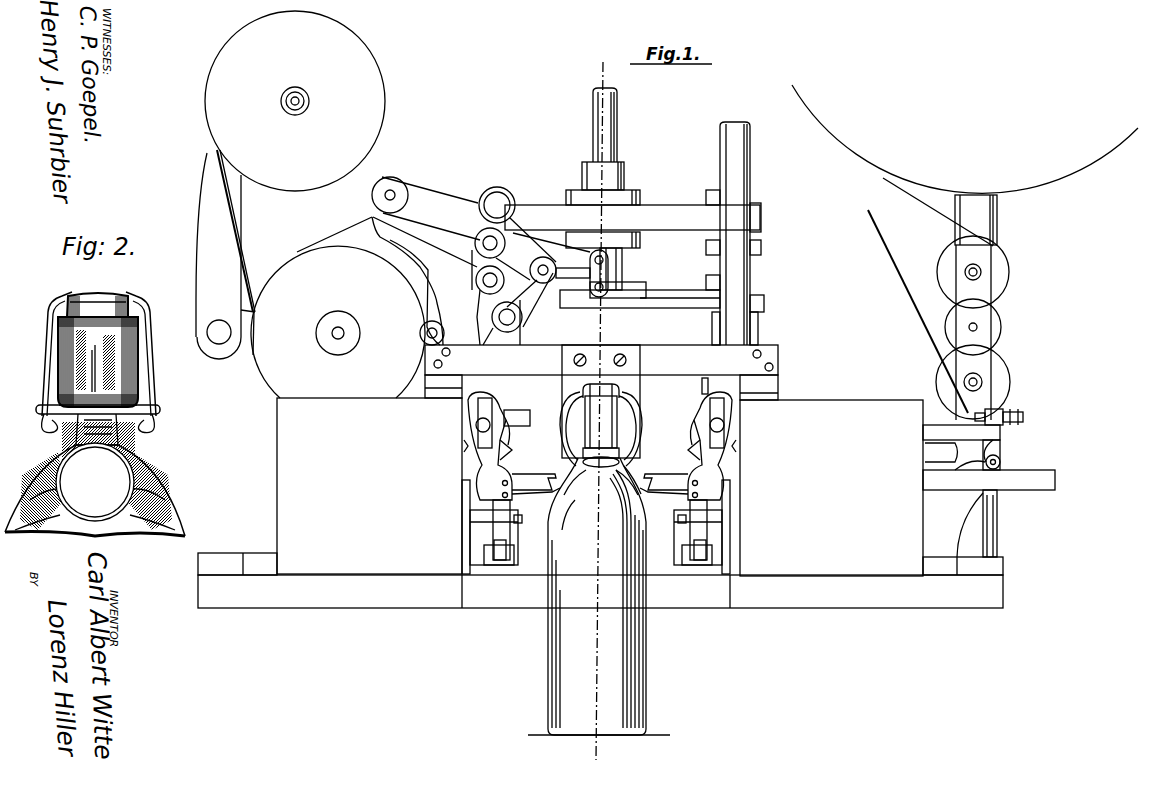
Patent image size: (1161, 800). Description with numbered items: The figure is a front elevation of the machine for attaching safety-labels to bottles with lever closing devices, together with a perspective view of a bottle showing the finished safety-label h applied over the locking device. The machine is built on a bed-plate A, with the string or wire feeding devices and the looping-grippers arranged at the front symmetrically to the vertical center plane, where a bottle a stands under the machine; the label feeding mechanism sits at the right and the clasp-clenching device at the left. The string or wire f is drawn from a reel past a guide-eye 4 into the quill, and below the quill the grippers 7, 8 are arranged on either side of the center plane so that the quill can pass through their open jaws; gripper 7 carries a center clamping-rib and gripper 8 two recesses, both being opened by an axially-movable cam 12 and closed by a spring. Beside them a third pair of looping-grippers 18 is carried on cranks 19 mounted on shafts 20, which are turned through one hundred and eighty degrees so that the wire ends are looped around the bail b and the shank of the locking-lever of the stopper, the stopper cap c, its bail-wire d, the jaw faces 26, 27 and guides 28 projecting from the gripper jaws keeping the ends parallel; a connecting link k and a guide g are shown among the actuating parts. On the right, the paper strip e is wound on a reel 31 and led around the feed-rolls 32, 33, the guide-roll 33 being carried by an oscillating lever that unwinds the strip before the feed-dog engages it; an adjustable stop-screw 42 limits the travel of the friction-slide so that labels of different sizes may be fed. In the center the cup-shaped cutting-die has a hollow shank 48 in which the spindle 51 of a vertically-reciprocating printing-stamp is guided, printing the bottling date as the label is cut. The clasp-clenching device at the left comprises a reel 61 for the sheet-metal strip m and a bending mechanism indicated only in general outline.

In FIG. 1, the second guide-eye 4 is at (1010, 455).
In FIG. 1, the reel 61 is at (212, 100).
In FIG. 1, the sheet-metal strip m is at (244, 270).
In FIG. 1, the connecting link k is at (587, 288).
In FIG. 1, the spindle of the printing-stamp 51 is at (612, 137).
In FIG. 1, the hollow shank 48 is at (618, 178).
In FIG. 1, the cranks 19 is at (600, 439).
In FIG. 1, the shafts 20 is at (466, 446).
In FIG. 1, the jaw cam face 26 is at (599, 431).
In FIG. 1, the jaw notch 27 is at (505, 455).
In FIG. 1, the guides 28 is at (536, 476).
In FIG. 1, the looping-grippers 18 is at (524, 500).
In FIG. 1, the gripper 7 is at (507, 530).
In FIG. 1, the gripper 8 is at (692, 530).
In FIG. 1, the axially-movable cam 12 is at (498, 566).
In FIG. 1, the bottle a is at (626, 663).
In FIG. 1, the stopper cap c is at (601, 421).
In FIG. 1, the stopper bail wire d is at (628, 440).
In FIG. 1, the bail b is at (601, 469).
In FIG. 1, the string or wire f is at (628, 470).
In FIG. 1, the reel 31 is at (828, 118).
In FIG. 1, the strip of paper e is at (942, 202).
In FIG. 1, the guide rod g is at (896, 265).
In FIG. 1, the feed-roll 32 is at (1003, 276).
In FIG. 1, the guide-roll 33 is at (993, 329).
In FIG. 1, the adjustable stop-screw 42 is at (1008, 410).
In FIG. 1, the bed-plate A is at (392, 590).
In FIG. 2, the stopper head h is at (136, 441).